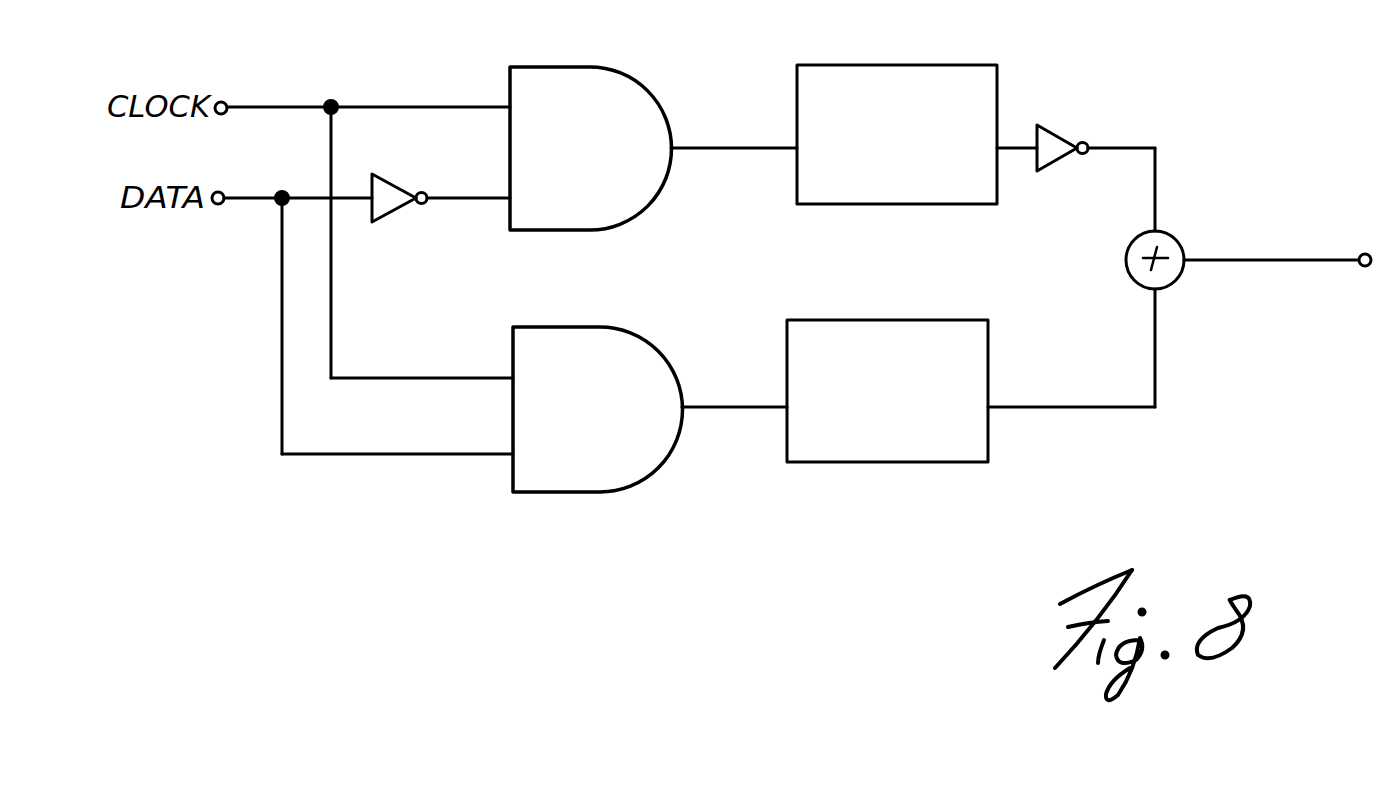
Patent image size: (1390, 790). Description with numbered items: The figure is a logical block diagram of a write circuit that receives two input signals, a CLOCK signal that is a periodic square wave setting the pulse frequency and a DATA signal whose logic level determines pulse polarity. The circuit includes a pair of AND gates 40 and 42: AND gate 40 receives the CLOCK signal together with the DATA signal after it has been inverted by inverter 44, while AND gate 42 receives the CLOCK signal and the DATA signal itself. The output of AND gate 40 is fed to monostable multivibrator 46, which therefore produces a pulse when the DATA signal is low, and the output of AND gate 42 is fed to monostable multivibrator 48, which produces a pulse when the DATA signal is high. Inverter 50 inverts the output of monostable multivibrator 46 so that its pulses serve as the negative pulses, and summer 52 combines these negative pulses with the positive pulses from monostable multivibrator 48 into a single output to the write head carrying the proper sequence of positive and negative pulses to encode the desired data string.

The AND gate 40 is at (550, 66).
The AND gate 42 is at (565, 327).
The inverter 44 is at (393, 187).
The monostable multivibrator 46 is at (848, 66).
The monostable multivibrator 48 is at (836, 320).
The inverter 50 is at (1053, 130).
The summer 52 is at (1172, 238).